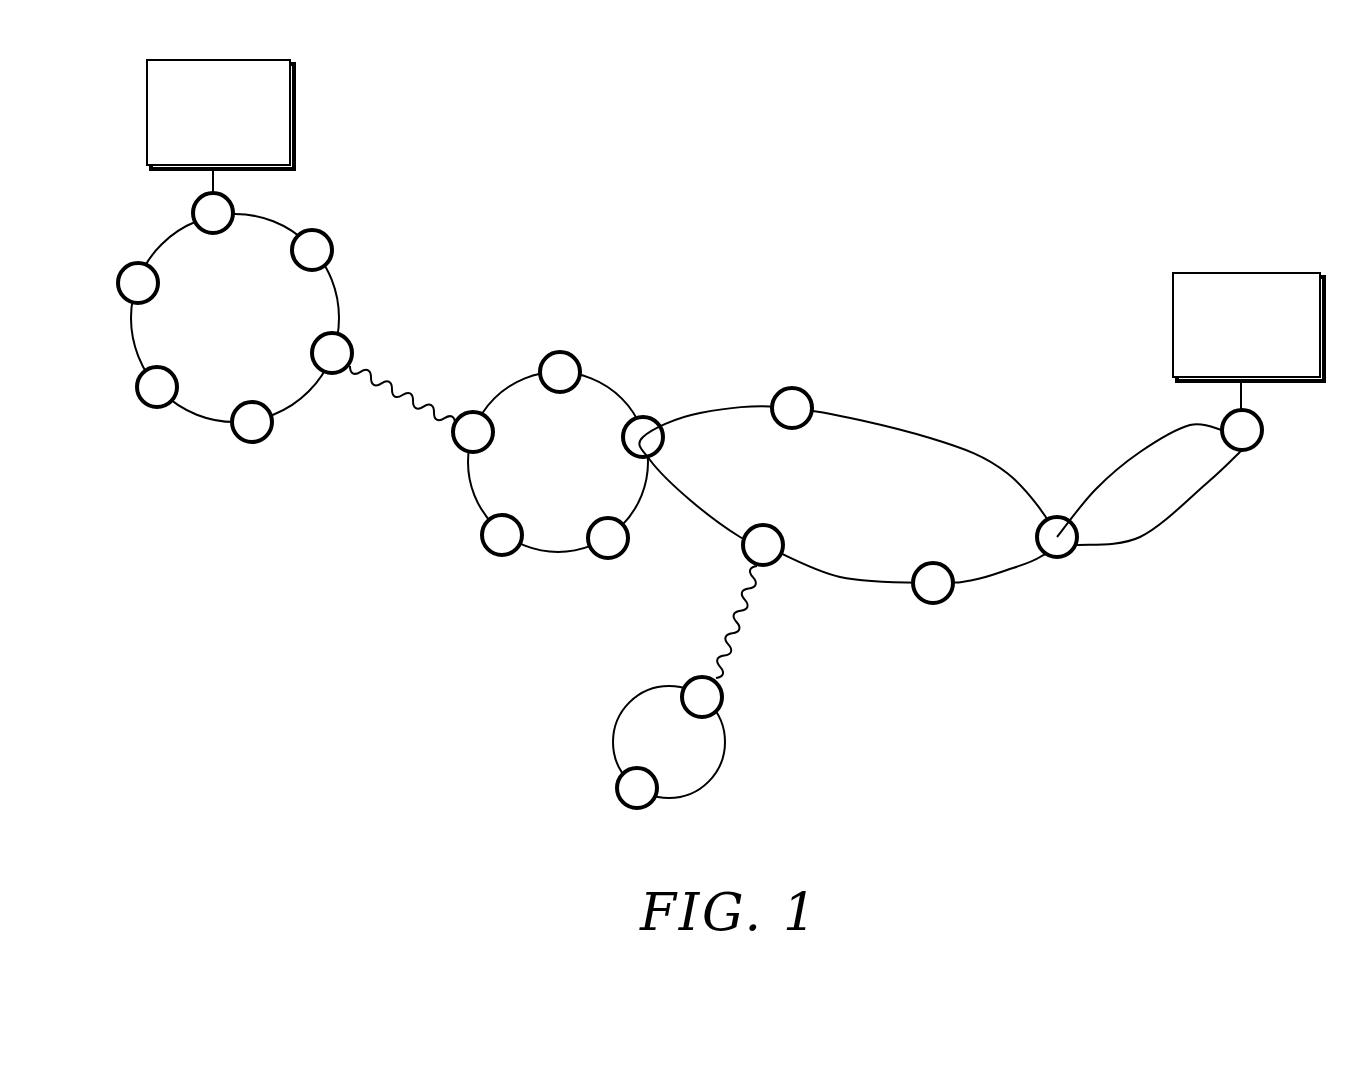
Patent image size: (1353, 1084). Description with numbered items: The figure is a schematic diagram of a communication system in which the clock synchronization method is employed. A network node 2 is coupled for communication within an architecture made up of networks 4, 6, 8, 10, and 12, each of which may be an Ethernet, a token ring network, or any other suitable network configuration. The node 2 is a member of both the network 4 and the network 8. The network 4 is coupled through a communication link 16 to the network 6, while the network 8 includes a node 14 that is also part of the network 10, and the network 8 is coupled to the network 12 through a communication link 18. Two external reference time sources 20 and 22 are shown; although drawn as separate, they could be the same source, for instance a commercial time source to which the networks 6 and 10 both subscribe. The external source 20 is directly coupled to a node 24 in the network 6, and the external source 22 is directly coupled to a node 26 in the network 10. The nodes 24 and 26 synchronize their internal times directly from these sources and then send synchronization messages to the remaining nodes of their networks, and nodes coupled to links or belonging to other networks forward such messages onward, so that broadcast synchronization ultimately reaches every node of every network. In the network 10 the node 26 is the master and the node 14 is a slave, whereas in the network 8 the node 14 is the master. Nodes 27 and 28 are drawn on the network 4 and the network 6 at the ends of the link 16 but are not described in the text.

The network node 2 is at (650, 418).
The network 4 is at (612, 388).
The network 6 is at (267, 217).
The network 8 is at (930, 438).
The network 10 is at (1140, 452).
The network 12 is at (627, 707).
The node 14 is at (1062, 558).
The communication link 16 is at (410, 393).
The communication link 18 is at (748, 640).
The external reference time source 20 is at (295, 124).
The external reference time source 22 is at (1173, 320).
The node 24 is at (193, 206).
The node 26 is at (1264, 430).
The node 27 is at (460, 450).
The node 28 is at (327, 375).